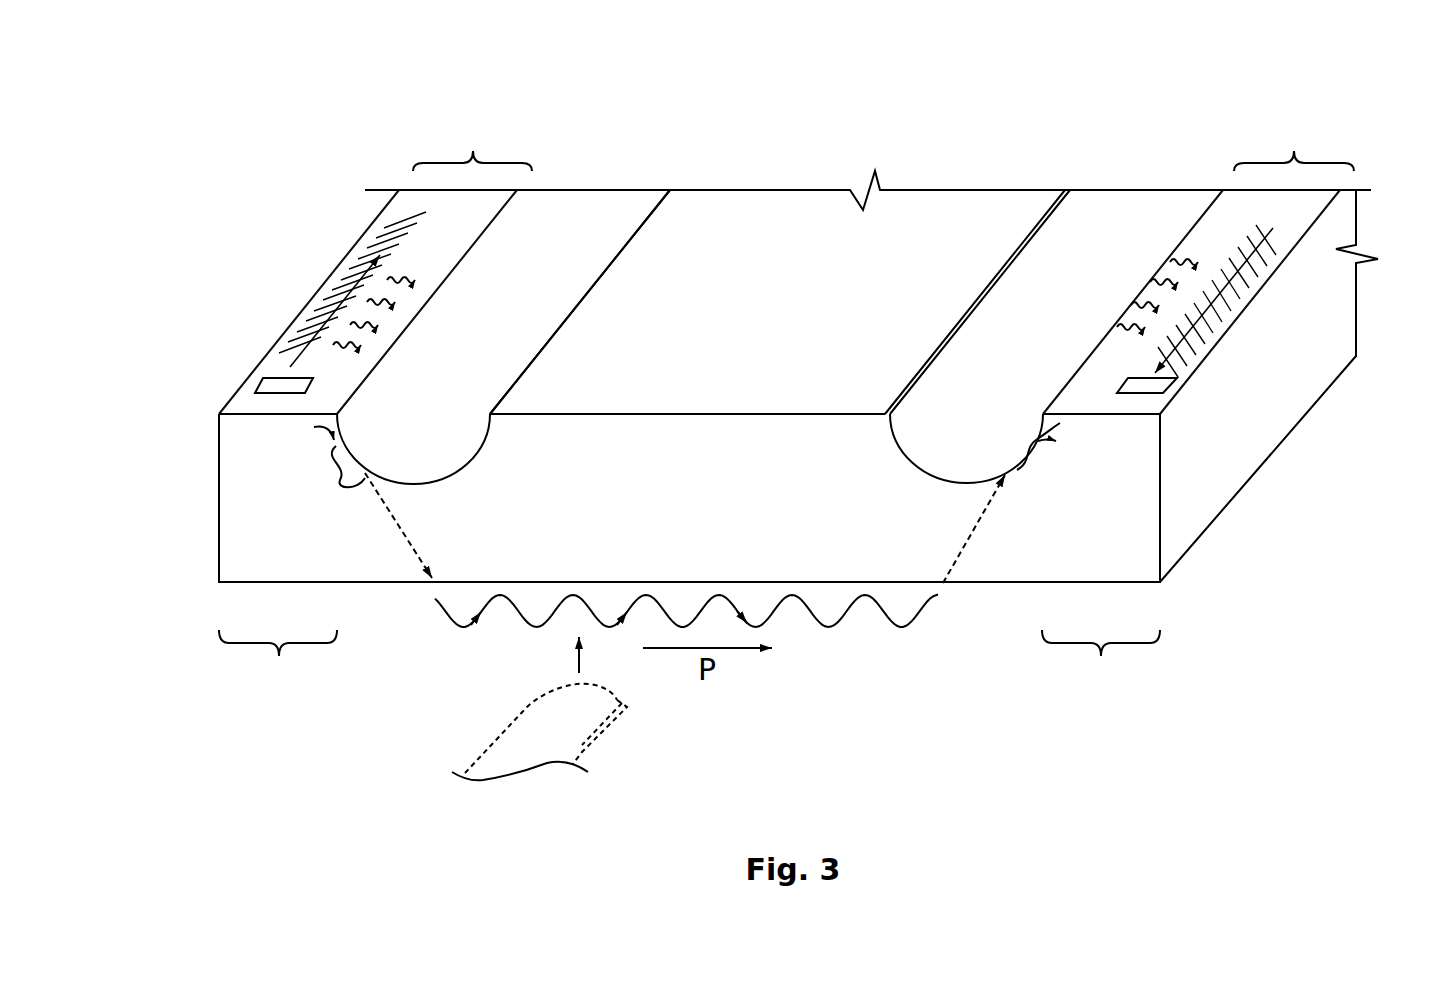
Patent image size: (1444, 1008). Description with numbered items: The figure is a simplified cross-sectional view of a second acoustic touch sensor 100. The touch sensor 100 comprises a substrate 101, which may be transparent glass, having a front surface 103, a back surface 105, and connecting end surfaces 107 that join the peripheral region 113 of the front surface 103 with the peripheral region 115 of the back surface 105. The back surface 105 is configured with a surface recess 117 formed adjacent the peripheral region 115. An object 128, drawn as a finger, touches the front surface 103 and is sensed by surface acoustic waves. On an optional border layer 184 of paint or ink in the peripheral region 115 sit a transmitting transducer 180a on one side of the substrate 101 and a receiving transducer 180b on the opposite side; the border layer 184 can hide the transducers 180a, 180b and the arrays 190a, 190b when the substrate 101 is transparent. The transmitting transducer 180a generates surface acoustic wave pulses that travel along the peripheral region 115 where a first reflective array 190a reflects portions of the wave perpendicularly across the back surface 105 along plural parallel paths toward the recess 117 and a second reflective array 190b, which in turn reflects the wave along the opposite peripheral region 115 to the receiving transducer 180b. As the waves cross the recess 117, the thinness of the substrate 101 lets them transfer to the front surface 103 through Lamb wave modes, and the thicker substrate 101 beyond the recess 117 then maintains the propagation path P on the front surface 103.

The acoustic touch sensor 100 is at (336, 118).
The substrate 101 is at (702, 502).
The front surface 103 is at (1100, 588).
The back surface 105 is at (953, 215).
The connecting end surfaces 107 is at (219, 497).
The peripheral region of the front surface 113 is at (689, 659).
The peripheral region of the back surface 115 is at (883, 146).
The surface recess 117 is at (573, 293).
The object 128 is at (510, 735).
The transmitting transducer 180a is at (273, 385).
The receiving transducer 180b is at (1162, 381).
The border layer 184 is at (462, 234).
The first reflective array 190a is at (327, 262).
The second reflective array 190b is at (1244, 299).